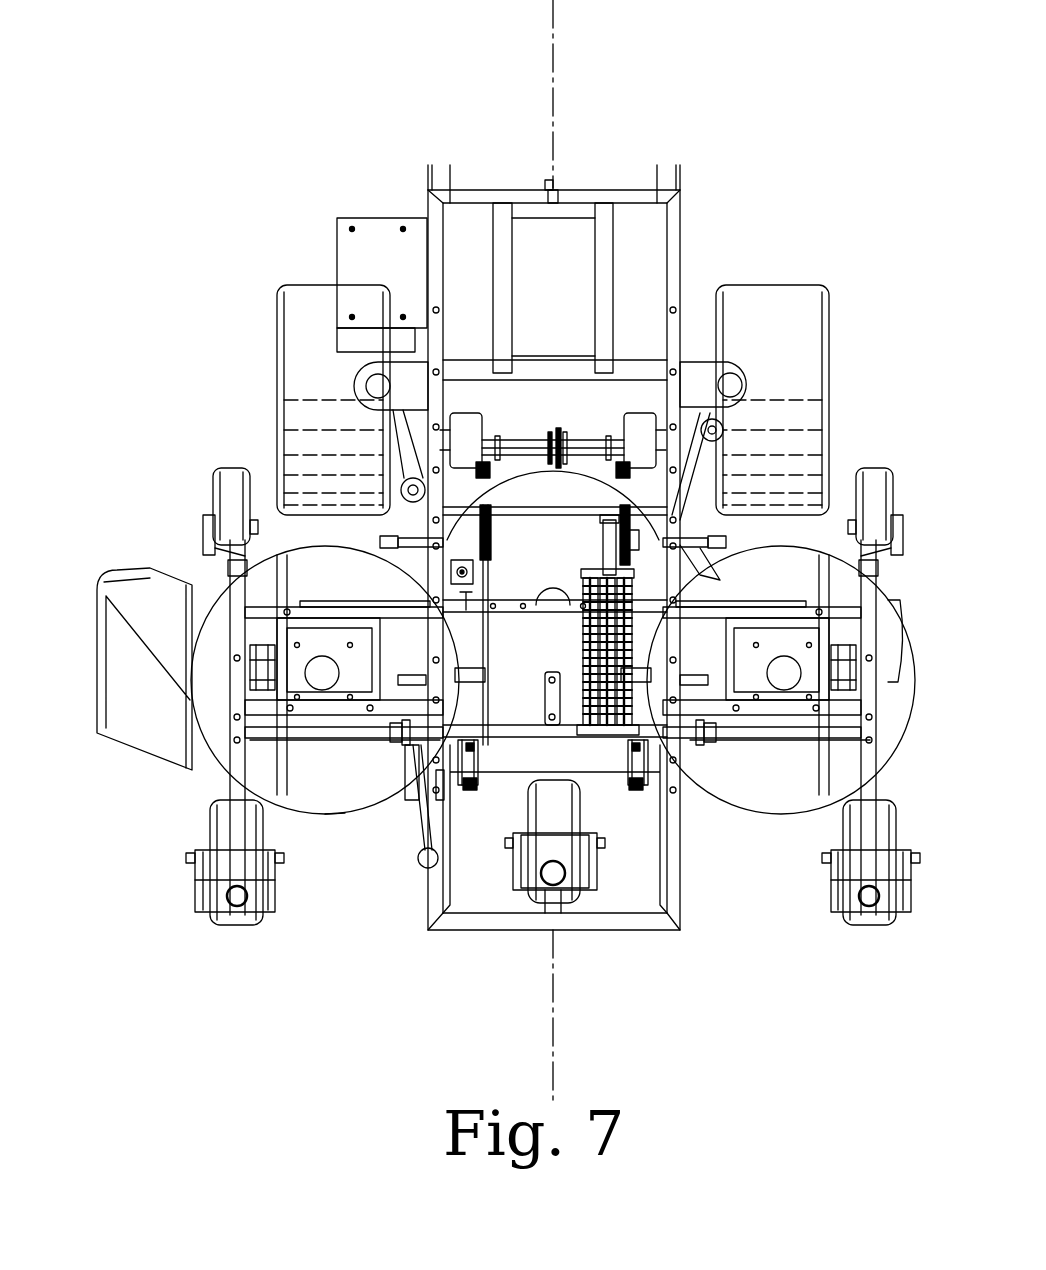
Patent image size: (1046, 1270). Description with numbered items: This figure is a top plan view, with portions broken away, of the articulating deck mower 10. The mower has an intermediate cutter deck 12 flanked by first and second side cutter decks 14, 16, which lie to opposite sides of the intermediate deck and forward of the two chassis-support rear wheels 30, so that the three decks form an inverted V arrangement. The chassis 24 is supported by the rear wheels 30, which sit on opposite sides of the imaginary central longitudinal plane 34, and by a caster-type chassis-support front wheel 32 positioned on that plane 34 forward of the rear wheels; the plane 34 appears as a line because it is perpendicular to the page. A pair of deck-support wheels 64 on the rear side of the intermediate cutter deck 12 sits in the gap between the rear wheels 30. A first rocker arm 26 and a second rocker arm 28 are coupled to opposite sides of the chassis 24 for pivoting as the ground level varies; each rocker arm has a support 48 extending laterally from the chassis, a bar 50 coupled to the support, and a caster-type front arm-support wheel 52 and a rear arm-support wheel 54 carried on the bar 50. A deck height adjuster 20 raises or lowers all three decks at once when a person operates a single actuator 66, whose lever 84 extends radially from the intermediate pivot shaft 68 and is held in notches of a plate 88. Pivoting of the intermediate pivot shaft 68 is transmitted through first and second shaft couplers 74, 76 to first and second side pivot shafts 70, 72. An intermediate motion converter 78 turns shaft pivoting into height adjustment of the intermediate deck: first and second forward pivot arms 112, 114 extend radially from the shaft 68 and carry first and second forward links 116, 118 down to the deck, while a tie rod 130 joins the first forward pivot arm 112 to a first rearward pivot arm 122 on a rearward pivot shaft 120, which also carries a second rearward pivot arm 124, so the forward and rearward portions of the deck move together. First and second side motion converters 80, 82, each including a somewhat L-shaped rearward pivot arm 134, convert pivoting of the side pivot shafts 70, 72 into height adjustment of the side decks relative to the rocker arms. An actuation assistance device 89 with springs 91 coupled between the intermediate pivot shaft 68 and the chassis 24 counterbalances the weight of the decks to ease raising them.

The articulating deck mower 10 is at (234, 70).
The intermediate cutter deck 12 is at (514, 470).
The first side cutter deck 14 is at (330, 822).
The second side cutter deck 16 is at (758, 798).
The deck height adjuster 20 is at (362, 818).
The chassis 24 is at (624, 915).
The first rocker arm 26 is at (292, 596).
The second rocker arm 28 is at (760, 598).
The chassis-support rear wheel 30 is at (300, 290).
The chassis-support front wheel 32 is at (565, 810).
The imaginary central longitudinal plane 34 is at (554, 50).
The support 48 is at (338, 706).
The bar 50 is at (228, 782).
The front arm-support wheel 52 is at (235, 920).
The rear arm-support wheel 54 is at (228, 476).
The deck-support wheel 64 is at (470, 422).
The actuator 66 is at (403, 830).
The intermediate pivot shaft 68 is at (540, 735).
The first side pivot shaft 70 is at (300, 736).
The second side pivot shaft 72 is at (775, 733).
The first shaft coupler 74 is at (382, 736).
The second shaft coupler 76 is at (720, 736).
The intermediate motion converter 78 is at (598, 468).
The first side motion converter 80 is at (272, 654).
The second side motion converter 82 is at (828, 662).
The lever 84 is at (418, 845).
The plate 88 is at (445, 790).
The actuation assistance device 89 is at (566, 668).
The springs 91 is at (584, 652).
The first forward pivot arm 112 is at (478, 762).
The second forward pivot arm 114 is at (628, 762).
The first forward link 116 is at (472, 750).
The second forward link 118 is at (634, 748).
The rearward pivot shaft 120 is at (557, 512).
The first rearward pivot arm 122 is at (434, 548).
The second rearward pivot arm 124 is at (690, 550).
The tie rod 130 is at (492, 568).
The rearward pivot arm 134 is at (248, 652).